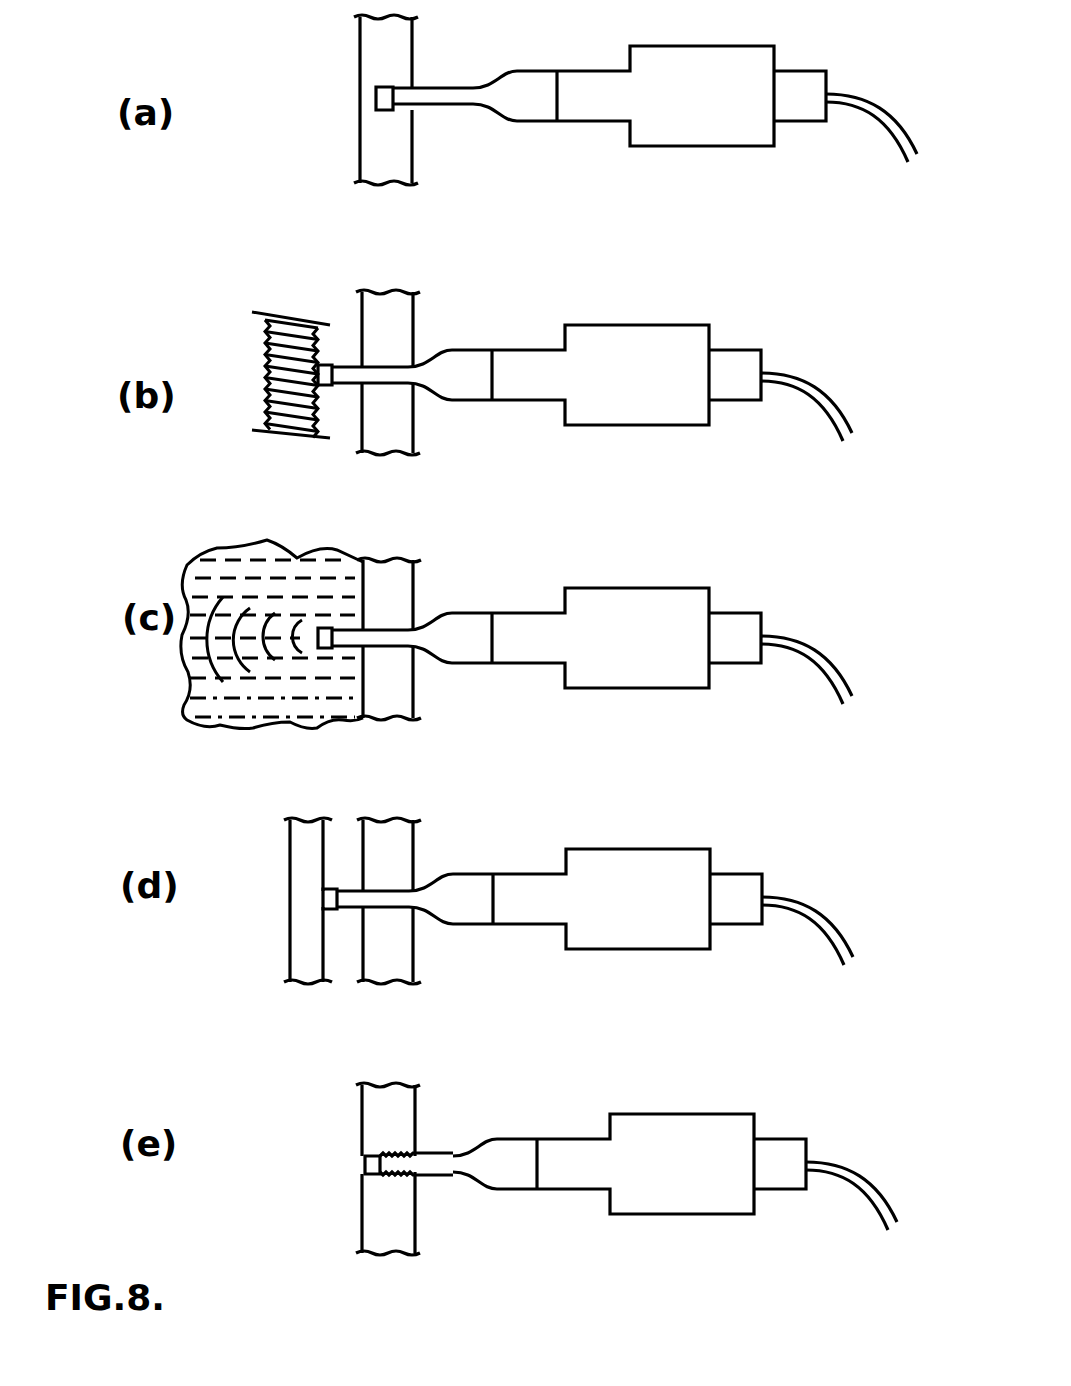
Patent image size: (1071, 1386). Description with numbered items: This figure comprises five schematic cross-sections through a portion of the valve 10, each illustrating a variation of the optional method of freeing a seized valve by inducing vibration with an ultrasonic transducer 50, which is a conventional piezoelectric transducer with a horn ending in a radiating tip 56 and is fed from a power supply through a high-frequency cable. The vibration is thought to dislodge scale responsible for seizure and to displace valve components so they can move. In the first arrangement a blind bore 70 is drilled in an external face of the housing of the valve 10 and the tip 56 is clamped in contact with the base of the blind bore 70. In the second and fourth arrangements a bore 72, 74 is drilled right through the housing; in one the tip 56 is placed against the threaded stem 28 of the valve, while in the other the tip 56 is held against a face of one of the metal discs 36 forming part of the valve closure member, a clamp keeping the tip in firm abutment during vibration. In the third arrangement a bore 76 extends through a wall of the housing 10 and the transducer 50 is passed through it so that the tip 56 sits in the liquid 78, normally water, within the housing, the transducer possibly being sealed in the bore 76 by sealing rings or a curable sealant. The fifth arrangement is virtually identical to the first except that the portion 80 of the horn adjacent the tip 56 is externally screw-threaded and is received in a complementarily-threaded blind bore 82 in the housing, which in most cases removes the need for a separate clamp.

The valve 10 is at (352, 141).
The threaded stem 28 is at (263, 398).
The metal disc 36 is at (302, 865).
The ultrasonic transducer 50 is at (700, 40).
The radiating tip 56 is at (385, 98).
The blind bore 70 is at (390, 112).
The bore 72 is at (385, 360).
The bore 74 is at (380, 888).
The bore 76 is at (370, 625).
The liquid 78 is at (238, 688).
The externally screw-threaded portion of the transducer horn 80 is at (392, 1155).
The threaded blind bore 82 is at (398, 1175).